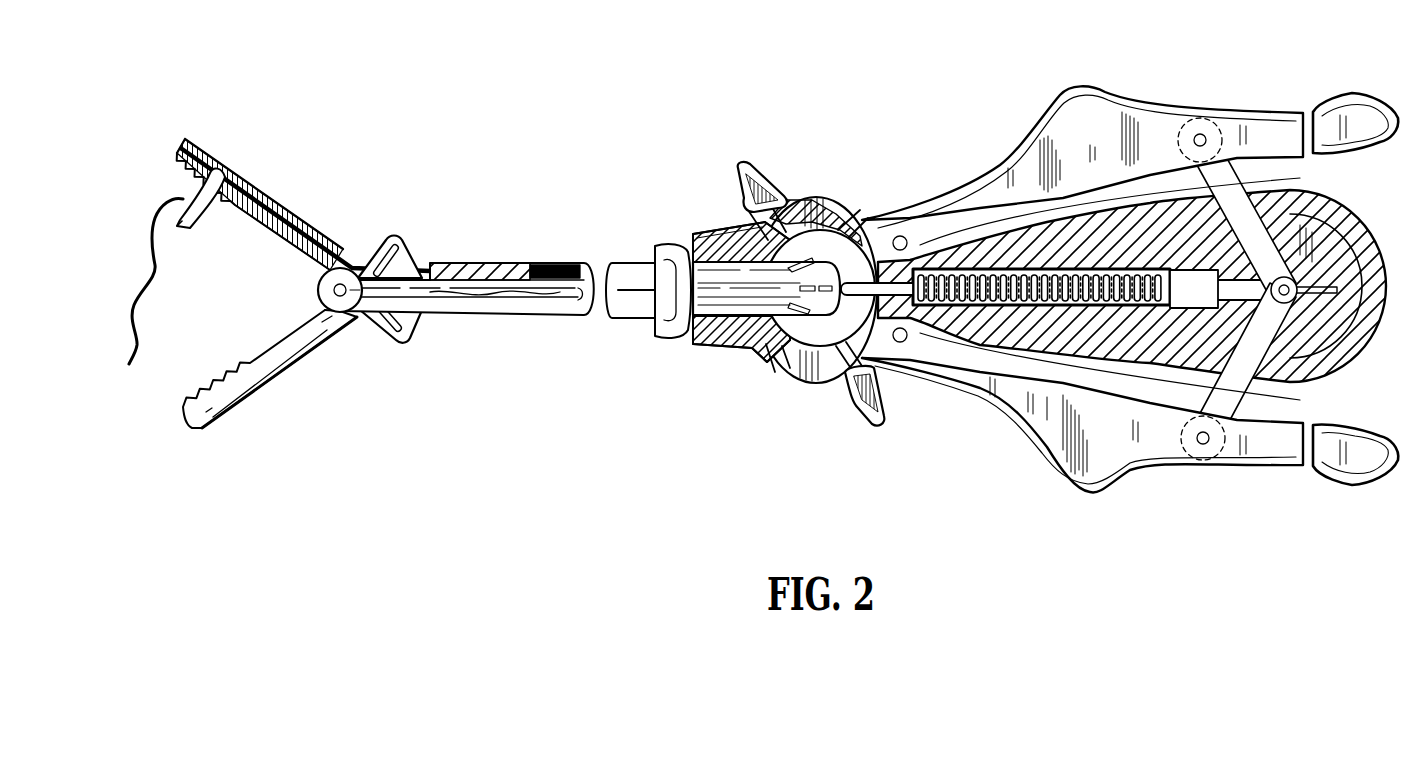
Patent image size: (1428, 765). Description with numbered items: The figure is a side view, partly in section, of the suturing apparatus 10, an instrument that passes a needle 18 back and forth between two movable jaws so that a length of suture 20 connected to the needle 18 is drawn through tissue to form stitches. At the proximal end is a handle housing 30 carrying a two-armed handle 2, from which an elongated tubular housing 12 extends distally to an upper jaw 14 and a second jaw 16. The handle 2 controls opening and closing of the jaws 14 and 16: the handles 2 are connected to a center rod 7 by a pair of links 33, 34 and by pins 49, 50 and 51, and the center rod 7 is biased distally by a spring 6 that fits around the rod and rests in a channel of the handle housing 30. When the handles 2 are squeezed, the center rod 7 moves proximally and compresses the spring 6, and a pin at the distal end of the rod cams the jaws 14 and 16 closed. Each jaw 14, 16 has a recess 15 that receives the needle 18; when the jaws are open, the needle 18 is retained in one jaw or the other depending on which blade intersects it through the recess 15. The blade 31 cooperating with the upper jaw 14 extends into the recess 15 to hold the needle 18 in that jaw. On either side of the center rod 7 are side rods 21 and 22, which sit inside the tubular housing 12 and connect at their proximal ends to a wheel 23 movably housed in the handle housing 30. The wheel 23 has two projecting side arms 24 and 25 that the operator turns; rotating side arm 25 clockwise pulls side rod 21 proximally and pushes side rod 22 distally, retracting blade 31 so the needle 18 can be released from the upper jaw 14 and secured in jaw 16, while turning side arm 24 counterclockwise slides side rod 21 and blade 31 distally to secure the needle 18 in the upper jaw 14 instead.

The two-armed handle 2 is at (1270, 120).
The spring 6 is at (994, 312).
The center rod 7 is at (708, 294).
The suturing apparatus 10 is at (690, 454).
The elongated tubular housing 12 is at (625, 262).
The upper jaw 14 is at (247, 166).
The recess 15 is at (214, 194).
The jaw 16 is at (268, 390).
The needle 18 is at (194, 222).
The suture 20 is at (147, 280).
The side rod 21 is at (718, 268).
The side rod 22 is at (744, 330).
The wheel 23 is at (777, 244).
The side arm 24 is at (862, 406).
The side arm 25 is at (748, 163).
The handle housing 30 is at (1360, 228).
The blade 31 is at (280, 201).
The link 33 is at (1290, 258).
The link 34 is at (1336, 376).
The pin 49 is at (1202, 134).
The pin 50 is at (1298, 292).
The pin 51 is at (1206, 444).